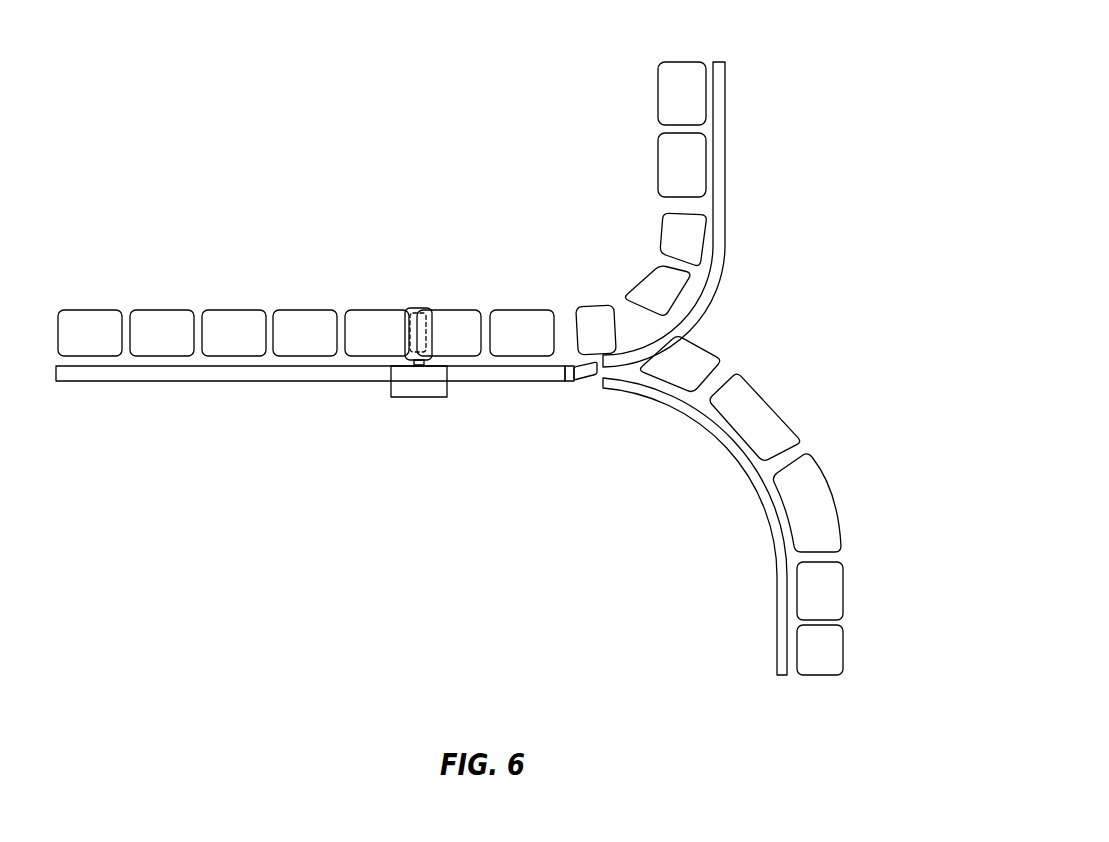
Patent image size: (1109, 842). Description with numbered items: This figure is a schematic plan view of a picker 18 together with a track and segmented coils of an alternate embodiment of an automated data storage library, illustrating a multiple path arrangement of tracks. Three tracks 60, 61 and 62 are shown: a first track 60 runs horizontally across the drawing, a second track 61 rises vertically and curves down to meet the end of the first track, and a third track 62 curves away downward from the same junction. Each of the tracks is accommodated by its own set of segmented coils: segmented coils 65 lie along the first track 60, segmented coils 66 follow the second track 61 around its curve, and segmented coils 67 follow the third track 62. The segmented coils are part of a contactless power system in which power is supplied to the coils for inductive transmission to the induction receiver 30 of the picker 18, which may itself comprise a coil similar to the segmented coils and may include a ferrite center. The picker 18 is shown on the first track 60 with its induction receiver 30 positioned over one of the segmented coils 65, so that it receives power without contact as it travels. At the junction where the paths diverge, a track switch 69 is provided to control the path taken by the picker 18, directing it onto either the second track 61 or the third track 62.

The picker 18 is at (430, 398).
The induction receiver 30 is at (412, 307).
The track 60 is at (290, 382).
The track 61 is at (727, 157).
The track 62 is at (777, 633).
The segmented coils 65 is at (620, 306).
The segmented coils 66 is at (658, 85).
The segmented coils 67 is at (710, 347).
The track switch 69 is at (582, 382).